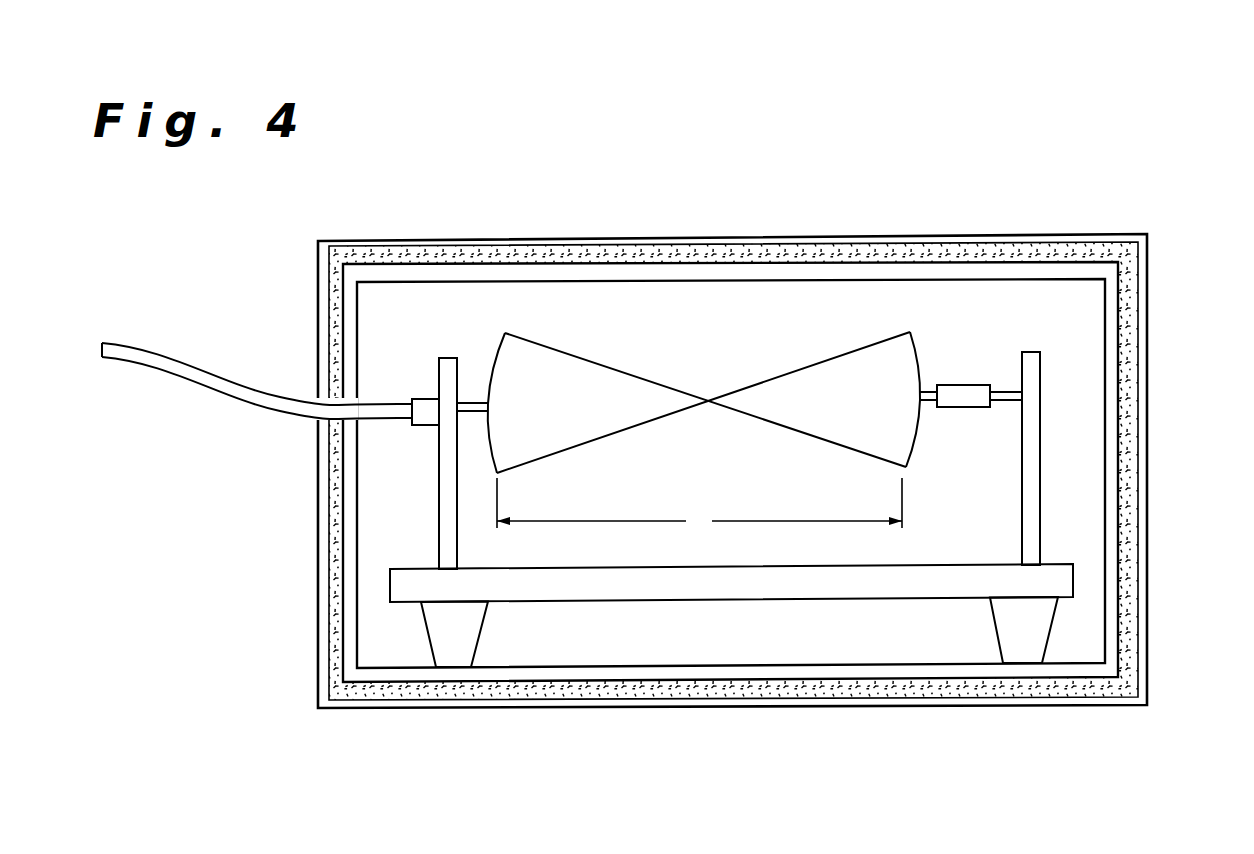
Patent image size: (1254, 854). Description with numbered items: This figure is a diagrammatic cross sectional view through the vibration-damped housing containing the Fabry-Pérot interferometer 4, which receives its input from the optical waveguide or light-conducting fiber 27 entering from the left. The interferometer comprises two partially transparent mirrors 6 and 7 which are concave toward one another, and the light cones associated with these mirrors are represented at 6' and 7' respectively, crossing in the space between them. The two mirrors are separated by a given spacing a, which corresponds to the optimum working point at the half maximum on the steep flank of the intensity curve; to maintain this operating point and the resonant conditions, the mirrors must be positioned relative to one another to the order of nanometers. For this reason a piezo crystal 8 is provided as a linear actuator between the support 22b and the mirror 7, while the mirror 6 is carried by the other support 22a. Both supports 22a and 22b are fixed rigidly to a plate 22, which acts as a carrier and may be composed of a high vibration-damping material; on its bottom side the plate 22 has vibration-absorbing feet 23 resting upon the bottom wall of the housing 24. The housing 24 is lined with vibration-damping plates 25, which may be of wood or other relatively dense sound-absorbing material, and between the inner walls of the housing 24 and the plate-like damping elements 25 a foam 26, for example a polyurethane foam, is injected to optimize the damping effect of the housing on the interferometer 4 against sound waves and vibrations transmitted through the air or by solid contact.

The interferometer 4 is at (645, 225).
The mirror 6 is at (481, 384).
The mirror 7 is at (923, 376).
The light cone 6' is at (703, 403).
The light cone 7' is at (705, 400).
The piezo crystal 8 is at (960, 385).
The plate 22 is at (730, 582).
The support 22a is at (439, 516).
The support 22b is at (1022, 507).
The feet 23 is at (455, 640).
The housing 24 is at (1140, 447).
The vibration-damping plates 25 is at (808, 266).
The foam 26 is at (333, 515).
The light-conducting fiber 27 is at (172, 366).
The spacing a is at (699, 507).